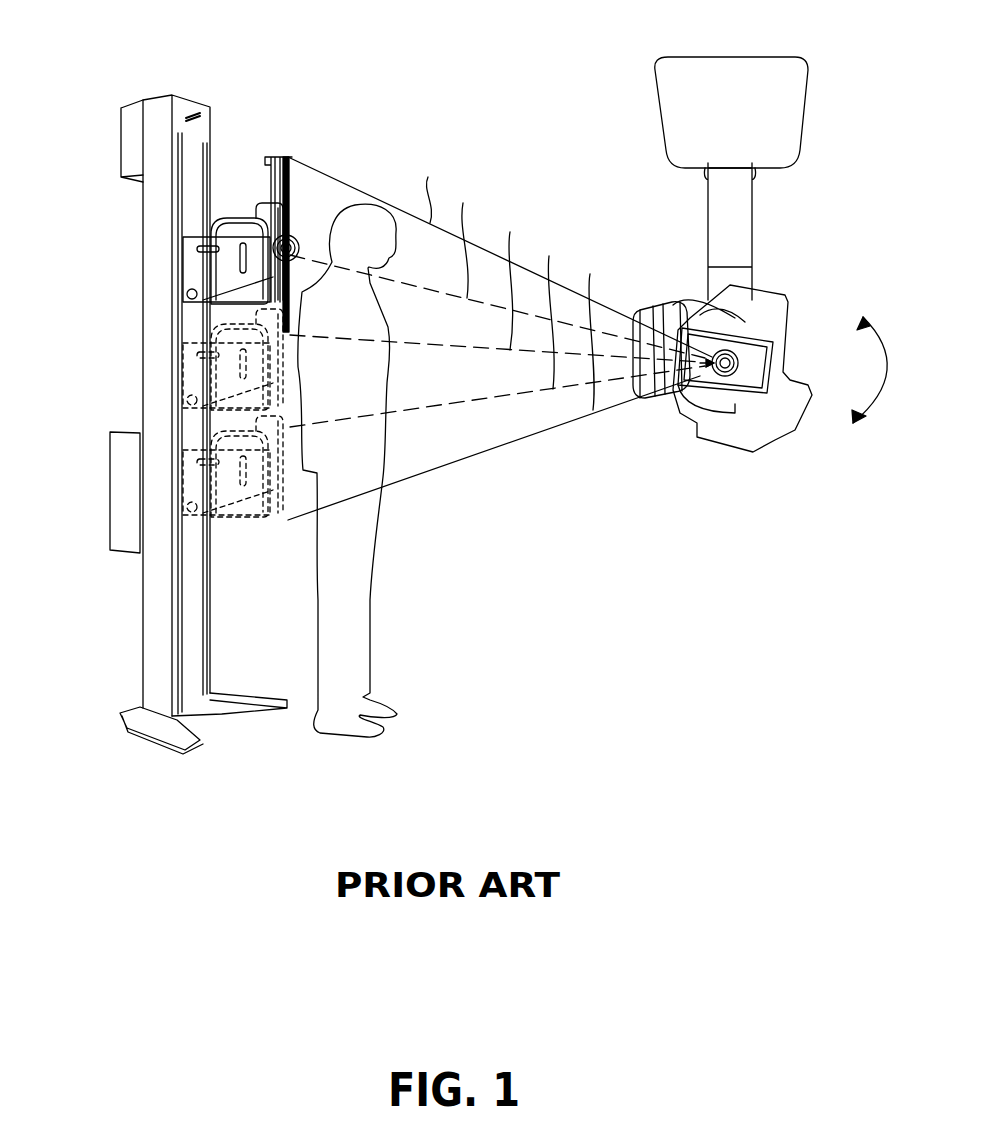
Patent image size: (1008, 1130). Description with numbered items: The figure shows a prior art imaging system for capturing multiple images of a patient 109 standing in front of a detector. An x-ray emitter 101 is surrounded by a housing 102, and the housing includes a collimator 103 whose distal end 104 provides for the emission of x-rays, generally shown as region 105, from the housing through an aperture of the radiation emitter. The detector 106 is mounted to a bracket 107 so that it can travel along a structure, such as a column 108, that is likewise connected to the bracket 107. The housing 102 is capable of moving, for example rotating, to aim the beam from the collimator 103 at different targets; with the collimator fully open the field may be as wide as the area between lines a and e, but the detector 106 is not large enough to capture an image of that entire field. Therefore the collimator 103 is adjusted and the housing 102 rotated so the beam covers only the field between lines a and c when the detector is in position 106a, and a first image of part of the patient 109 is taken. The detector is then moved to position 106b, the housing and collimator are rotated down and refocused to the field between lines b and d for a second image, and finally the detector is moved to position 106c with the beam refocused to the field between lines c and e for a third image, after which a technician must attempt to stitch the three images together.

The x-ray emitter 101 is at (745, 370).
The housing 102 is at (793, 330).
The collimator 103 is at (700, 320).
The distal end 104 is at (677, 320).
The region of x-ray emission 105 is at (535, 440).
The detector 106 is at (273, 157).
The first detector position 106a is at (192, 262).
The second detector position 106b is at (192, 365).
The third detector position 106c is at (192, 481).
The bracket 107 is at (233, 218).
The column 108 is at (165, 97).
The patient 109 is at (370, 651).